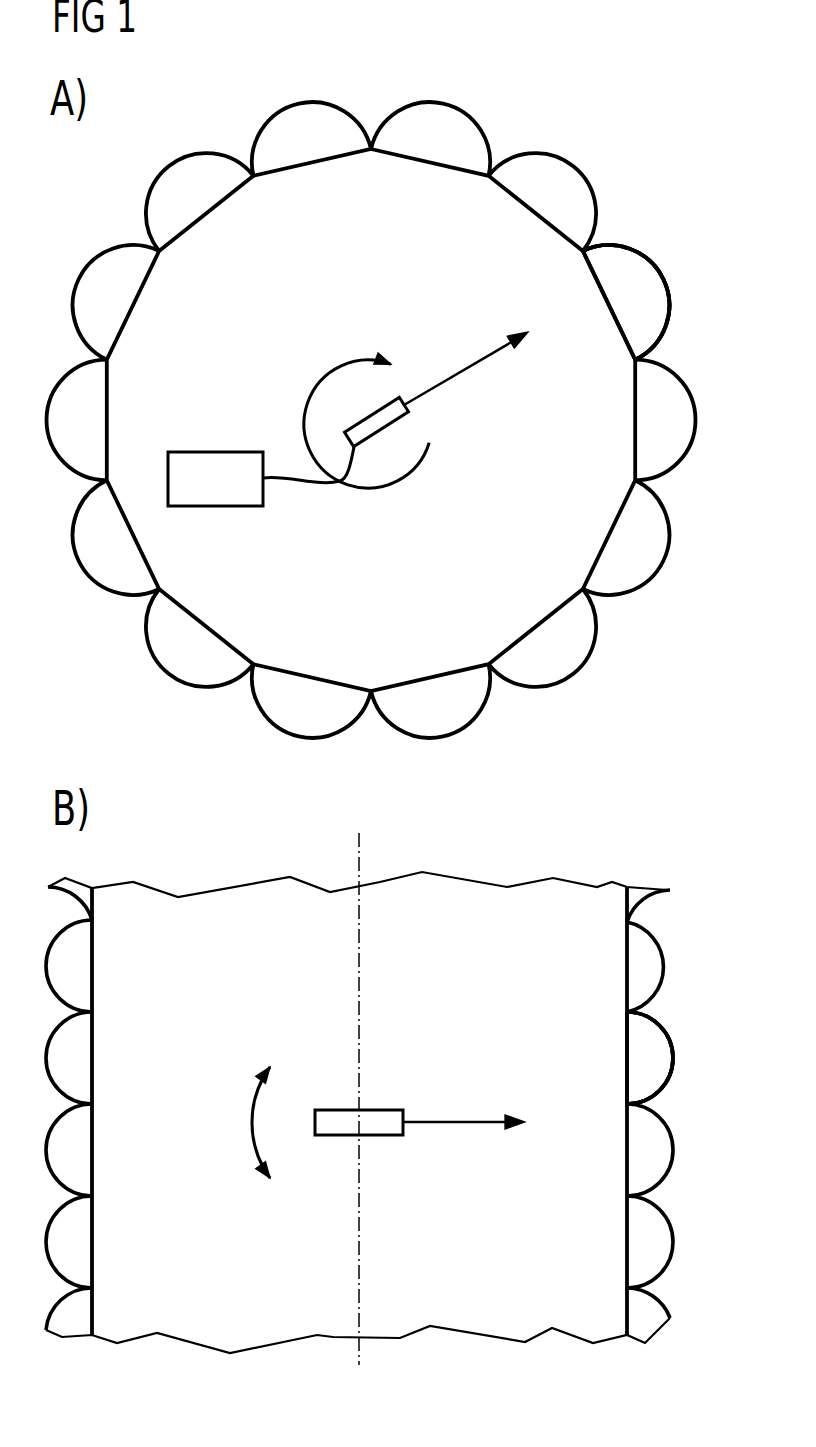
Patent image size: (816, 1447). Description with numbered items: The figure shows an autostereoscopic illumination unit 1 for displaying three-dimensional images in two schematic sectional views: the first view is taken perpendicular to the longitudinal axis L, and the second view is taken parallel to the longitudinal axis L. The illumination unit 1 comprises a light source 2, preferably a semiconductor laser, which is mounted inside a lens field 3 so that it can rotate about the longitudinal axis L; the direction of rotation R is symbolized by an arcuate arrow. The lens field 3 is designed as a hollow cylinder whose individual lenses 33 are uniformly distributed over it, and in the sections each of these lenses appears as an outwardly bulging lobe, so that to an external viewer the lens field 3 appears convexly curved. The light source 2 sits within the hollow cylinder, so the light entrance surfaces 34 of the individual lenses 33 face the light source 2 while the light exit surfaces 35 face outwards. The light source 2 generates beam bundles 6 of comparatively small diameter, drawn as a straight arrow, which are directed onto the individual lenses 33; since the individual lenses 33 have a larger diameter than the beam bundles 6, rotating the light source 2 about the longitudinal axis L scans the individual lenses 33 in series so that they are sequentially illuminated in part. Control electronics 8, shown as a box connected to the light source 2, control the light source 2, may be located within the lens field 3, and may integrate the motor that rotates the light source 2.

In FIG. 1A, the illumination unit 1 is at (641, 126).
In FIG. 1B, the illumination unit 1 is at (641, 857).
In FIG. 1A, the light source 2 is at (377, 437).
In FIG. 1B, the light source 2 is at (343, 1127).
In FIG. 1A, the lens field 3 is at (648, 262).
In FIG. 1B, the lens field 3 is at (673, 1243).
In FIG. 1A, the beam bundles 6 is at (467, 373).
In FIG. 1B, the beam bundles 6 is at (453, 1120).
In FIG. 1A, the control electronics 8 is at (213, 507).
In FIG. 1A, the individual lenses 33 is at (652, 300).
In FIG. 1B, the individual lenses 33 is at (657, 1047).
In FIG. 1A, the light entrance surfaces 34 is at (610, 307).
In FIG. 1B, the light entrance surfaces 34 is at (627, 1063).
In FIG. 1A, the light exit surfaces 35 is at (665, 334).
In FIG. 1B, the light exit surfaces 35 is at (670, 1087).
In FIG. 1A, the direction of rotation R is at (339, 364).
In FIG. 1B, the direction of rotation R is at (250, 1118).
In FIG. 1B, the longitudinal axis L is at (358, 848).